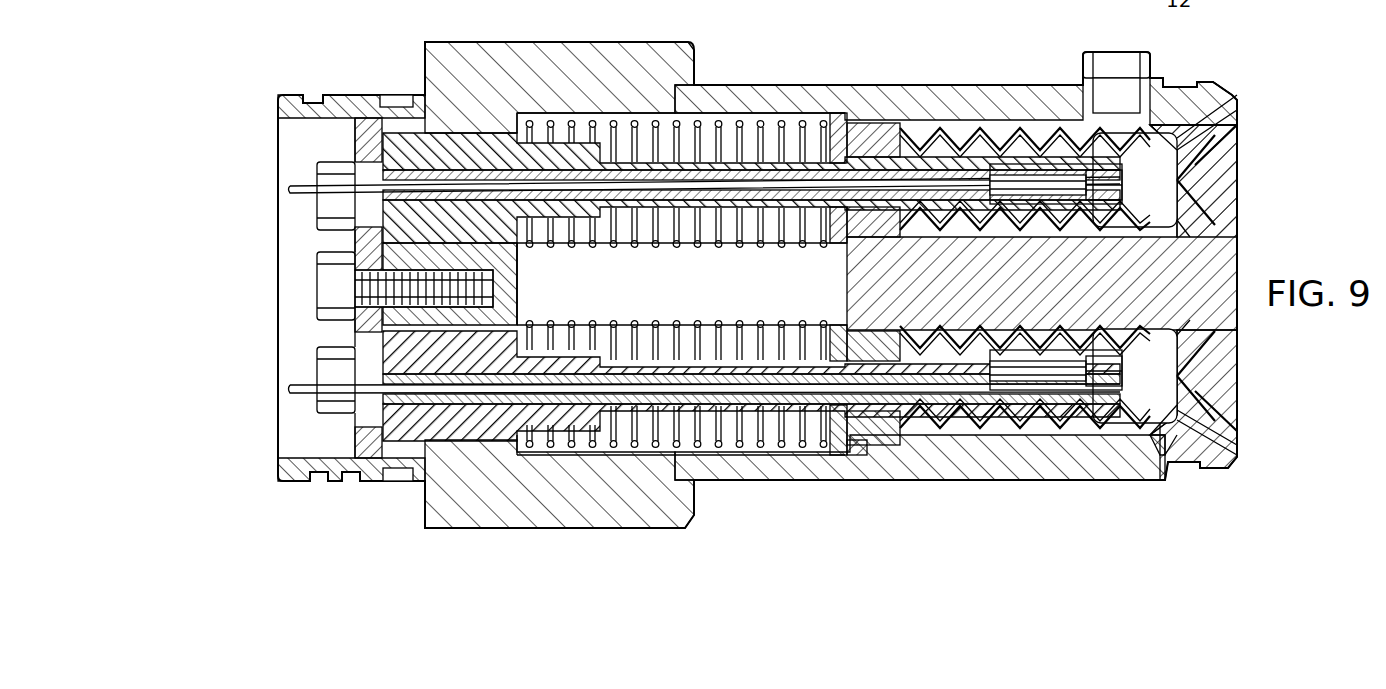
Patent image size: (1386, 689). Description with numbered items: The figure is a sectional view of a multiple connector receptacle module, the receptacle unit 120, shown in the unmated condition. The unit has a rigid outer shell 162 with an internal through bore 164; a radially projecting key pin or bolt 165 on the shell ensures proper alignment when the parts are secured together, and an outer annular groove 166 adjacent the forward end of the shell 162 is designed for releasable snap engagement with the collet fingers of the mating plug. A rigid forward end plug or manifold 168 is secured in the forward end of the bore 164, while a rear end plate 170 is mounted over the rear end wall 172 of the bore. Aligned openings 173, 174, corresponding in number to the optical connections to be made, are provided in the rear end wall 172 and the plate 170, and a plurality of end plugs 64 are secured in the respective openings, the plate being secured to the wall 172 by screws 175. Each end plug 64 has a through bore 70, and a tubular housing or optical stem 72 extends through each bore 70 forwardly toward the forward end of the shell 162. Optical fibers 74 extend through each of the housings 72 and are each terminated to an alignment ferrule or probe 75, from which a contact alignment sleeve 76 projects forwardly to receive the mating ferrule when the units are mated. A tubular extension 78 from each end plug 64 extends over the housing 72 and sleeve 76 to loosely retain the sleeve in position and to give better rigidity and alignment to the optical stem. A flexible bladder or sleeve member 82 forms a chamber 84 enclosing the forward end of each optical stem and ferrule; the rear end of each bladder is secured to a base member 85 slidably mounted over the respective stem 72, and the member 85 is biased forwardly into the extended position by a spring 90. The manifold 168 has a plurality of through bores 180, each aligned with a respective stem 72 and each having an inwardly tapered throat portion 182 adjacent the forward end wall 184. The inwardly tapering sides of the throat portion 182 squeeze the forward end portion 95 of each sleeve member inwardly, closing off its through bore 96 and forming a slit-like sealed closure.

The receptacle unit 120 is at (318, 72).
The aligned opening 173 is at (432, 88).
The through bore 70 is at (512, 165).
The end plug 64 is at (567, 158).
The internal through bore 164 is at (687, 108).
The spring 90 is at (748, 122).
The outer shell 162 is at (838, 90).
The through bore 180 is at (908, 127).
The alignment ferrule 75 is at (1037, 173).
The contact alignment sleeve 76 is at (1064, 168).
The key pin 165 is at (1098, 60).
The outer annular groove 166 is at (1180, 90).
The tapered throat portion 182 is at (1237, 105).
The forward end portion 95 is at (1236, 147).
The through bore 96 is at (1203, 170).
The forward end plug 168 is at (1208, 229).
The forward end wall 184 is at (1238, 250).
The aligned opening 174 is at (322, 168).
The screw 175 is at (318, 214).
The rear end plate 170 is at (352, 330).
The optical fiber 74 is at (332, 386).
The tubular housing 72 is at (423, 400).
The rear end wall 172 is at (518, 278).
The tubular extension 78 is at (713, 340).
The base member 85 is at (843, 426).
The sleeve member 82 is at (950, 425).
The chamber 84 is at (1158, 405).